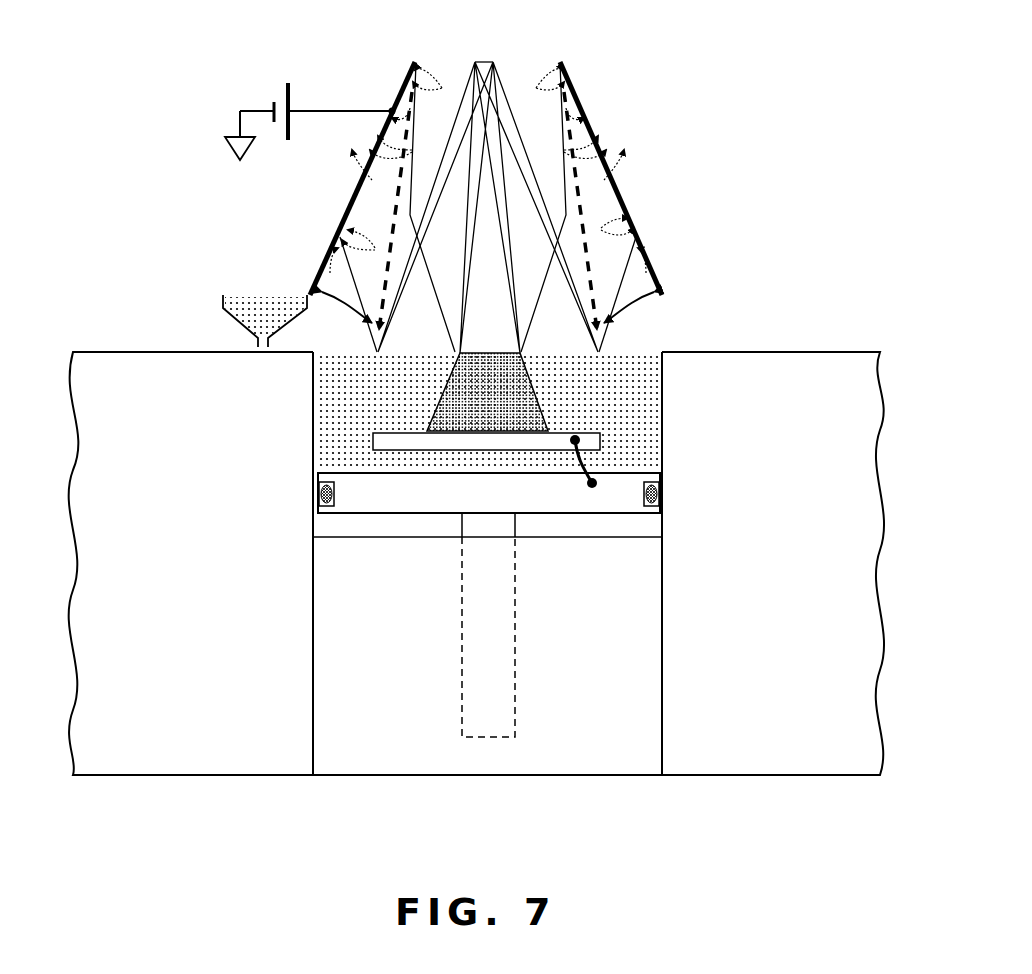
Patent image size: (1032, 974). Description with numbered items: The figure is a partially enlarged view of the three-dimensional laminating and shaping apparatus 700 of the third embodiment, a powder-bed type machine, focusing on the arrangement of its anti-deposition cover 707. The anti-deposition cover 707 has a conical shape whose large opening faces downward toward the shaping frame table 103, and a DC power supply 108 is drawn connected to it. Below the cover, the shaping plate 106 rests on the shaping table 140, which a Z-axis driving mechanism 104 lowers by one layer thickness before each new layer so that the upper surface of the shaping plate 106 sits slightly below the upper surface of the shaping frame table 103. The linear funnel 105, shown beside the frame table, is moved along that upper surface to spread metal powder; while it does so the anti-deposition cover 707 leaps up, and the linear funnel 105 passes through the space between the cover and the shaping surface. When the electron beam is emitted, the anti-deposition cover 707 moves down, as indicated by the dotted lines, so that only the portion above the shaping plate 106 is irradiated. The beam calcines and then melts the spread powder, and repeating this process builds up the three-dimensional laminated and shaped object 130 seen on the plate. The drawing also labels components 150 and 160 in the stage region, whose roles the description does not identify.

The three-dimensional laminating and shaping apparatus 700 is at (150, 112).
The shaping frame table 103 is at (820, 352).
The Z-axis driving mechanism 104 is at (484, 722).
The linear funnel 105 is at (240, 322).
The shaping plate 106 is at (392, 447).
The DC power supply 108 is at (288, 83).
The three-dimensional laminated and shaped object 130 is at (540, 405).
The shaping table 140 is at (545, 505).
The wire 150 is at (580, 465).
The insulating seal 160 is at (662, 490).
The anti-deposition cover 707 is at (622, 192).